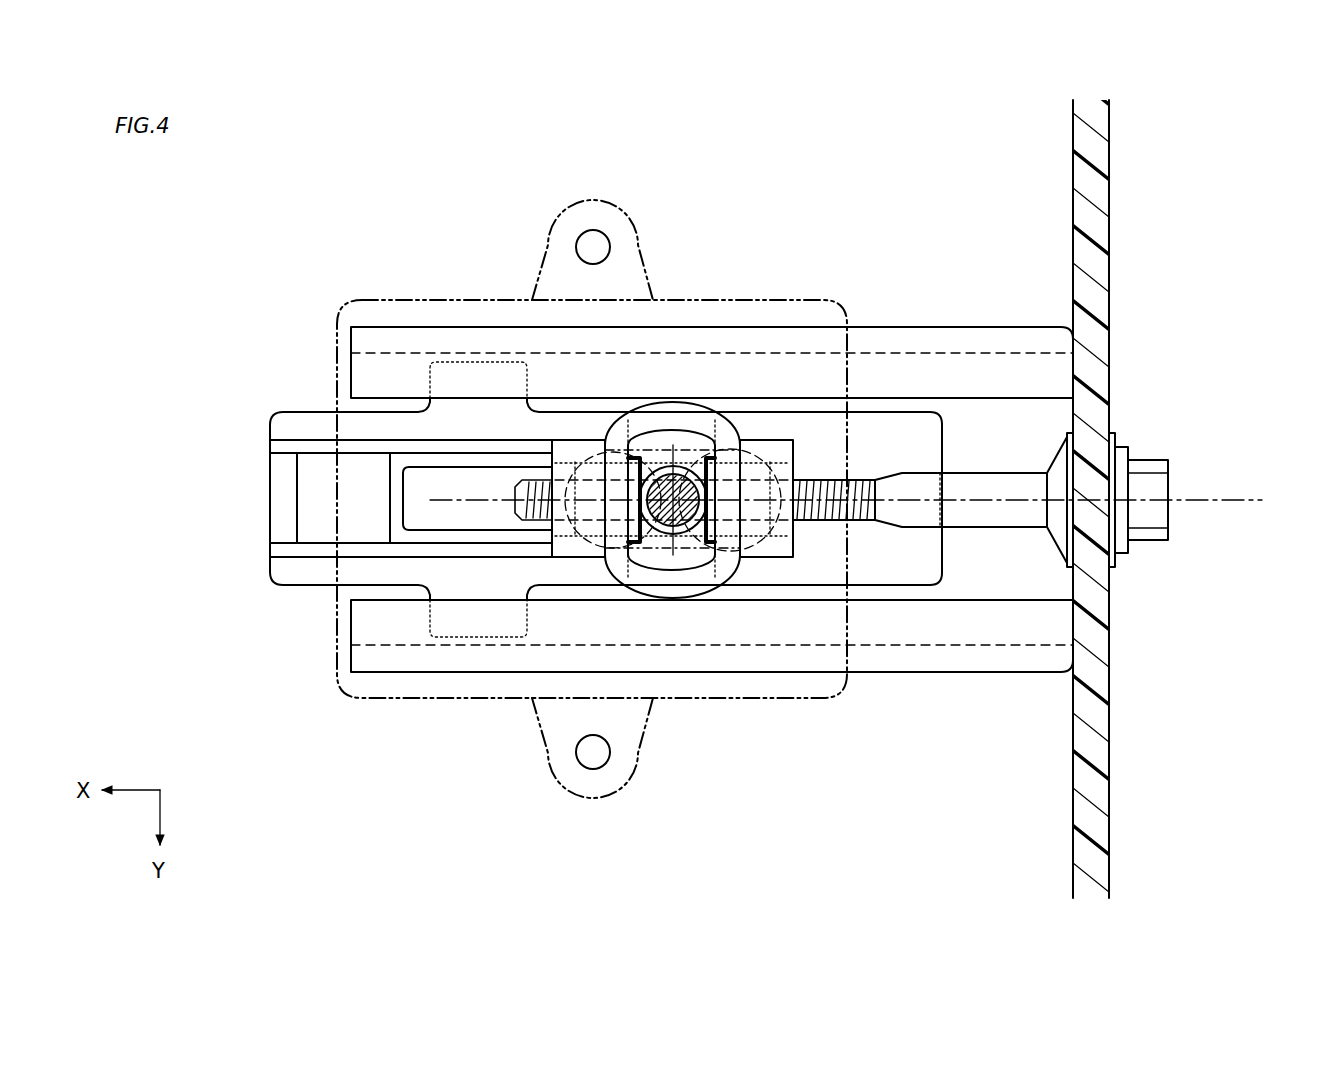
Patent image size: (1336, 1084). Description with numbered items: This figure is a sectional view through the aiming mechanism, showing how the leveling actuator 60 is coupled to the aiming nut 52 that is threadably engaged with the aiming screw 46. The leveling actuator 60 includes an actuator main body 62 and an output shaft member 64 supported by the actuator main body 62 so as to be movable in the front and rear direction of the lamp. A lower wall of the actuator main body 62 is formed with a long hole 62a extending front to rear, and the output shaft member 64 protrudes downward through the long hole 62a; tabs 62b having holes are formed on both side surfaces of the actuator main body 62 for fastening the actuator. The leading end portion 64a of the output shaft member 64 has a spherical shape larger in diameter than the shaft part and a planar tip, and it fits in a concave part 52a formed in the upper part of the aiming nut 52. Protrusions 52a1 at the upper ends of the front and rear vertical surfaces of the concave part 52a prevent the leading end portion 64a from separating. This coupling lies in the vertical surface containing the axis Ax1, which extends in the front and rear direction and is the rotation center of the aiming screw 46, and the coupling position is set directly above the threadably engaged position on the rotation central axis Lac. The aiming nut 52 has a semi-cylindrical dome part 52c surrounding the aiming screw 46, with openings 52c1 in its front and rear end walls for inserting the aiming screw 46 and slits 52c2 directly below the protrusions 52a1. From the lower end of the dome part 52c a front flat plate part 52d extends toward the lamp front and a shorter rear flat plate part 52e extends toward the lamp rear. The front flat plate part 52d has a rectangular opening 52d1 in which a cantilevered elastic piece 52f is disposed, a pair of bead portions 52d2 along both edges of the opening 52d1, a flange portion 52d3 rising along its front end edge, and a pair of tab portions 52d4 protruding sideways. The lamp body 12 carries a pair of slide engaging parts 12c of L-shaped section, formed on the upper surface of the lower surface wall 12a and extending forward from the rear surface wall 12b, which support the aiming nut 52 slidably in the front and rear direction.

The lamp body 12 is at (1113, 239).
The lower surface wall 12a is at (993, 788).
The rear surface wall 12b is at (1097, 723).
The slide engaging parts 12c is at (875, 340).
The aiming screw 46 is at (914, 470).
The aiming nut 52 is at (689, 399).
The concave part 52a is at (615, 437).
The protrusions 52a1 is at (692, 548).
The dome part 52c is at (775, 555).
The openings 52c1 is at (552, 522).
The slits 52c2 is at (640, 548).
The front flat plate part 52d is at (398, 573).
The opening 52d1 is at (398, 490).
The bead portions 52d2 is at (325, 445).
The flange portion 52d3 is at (282, 505).
The tab portions 52d4 is at (462, 375).
The rear flat plate part 52e is at (890, 565).
The elastic piece 52f is at (438, 482).
The leveling actuator 60 is at (520, 500).
The actuator main body 62 is at (705, 700).
The long hole 62a is at (752, 440).
The tabs 62b is at (605, 203).
The output shaft member 64 is at (660, 470).
The leading end portion 64a is at (684, 455).
The axis Ax1 is at (1193, 500).
The rotation central axis Lac is at (632, 515).